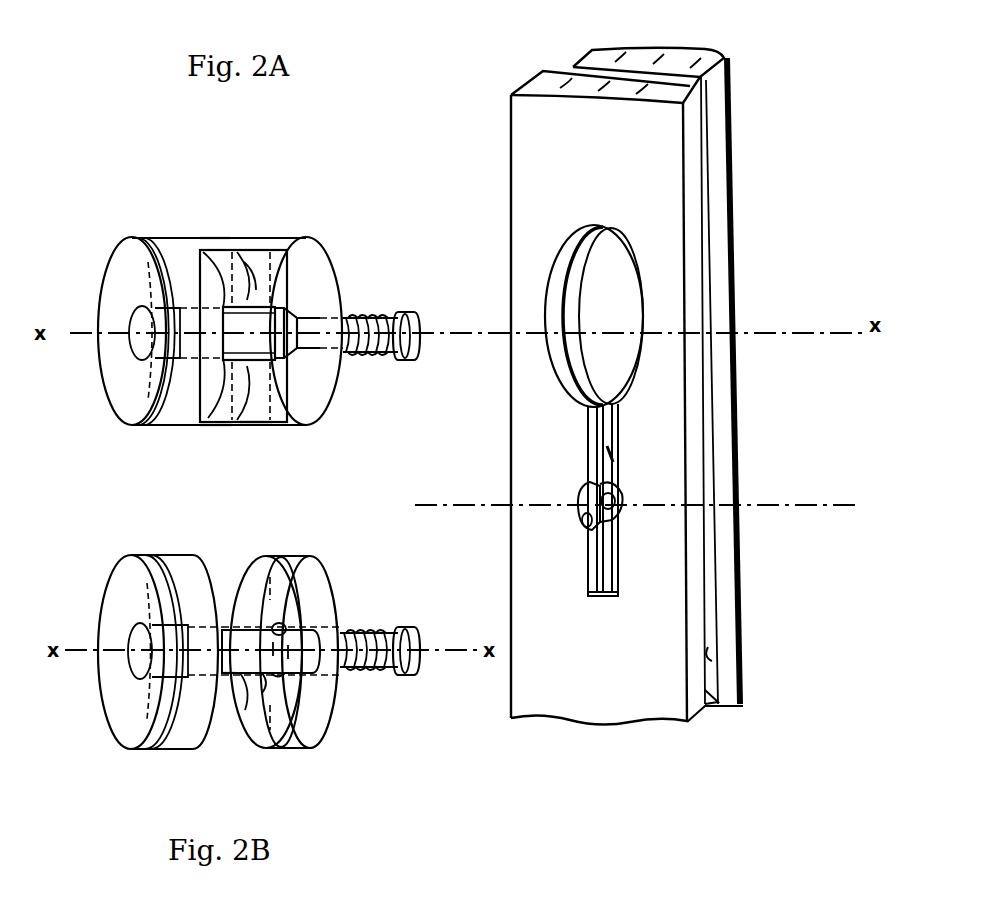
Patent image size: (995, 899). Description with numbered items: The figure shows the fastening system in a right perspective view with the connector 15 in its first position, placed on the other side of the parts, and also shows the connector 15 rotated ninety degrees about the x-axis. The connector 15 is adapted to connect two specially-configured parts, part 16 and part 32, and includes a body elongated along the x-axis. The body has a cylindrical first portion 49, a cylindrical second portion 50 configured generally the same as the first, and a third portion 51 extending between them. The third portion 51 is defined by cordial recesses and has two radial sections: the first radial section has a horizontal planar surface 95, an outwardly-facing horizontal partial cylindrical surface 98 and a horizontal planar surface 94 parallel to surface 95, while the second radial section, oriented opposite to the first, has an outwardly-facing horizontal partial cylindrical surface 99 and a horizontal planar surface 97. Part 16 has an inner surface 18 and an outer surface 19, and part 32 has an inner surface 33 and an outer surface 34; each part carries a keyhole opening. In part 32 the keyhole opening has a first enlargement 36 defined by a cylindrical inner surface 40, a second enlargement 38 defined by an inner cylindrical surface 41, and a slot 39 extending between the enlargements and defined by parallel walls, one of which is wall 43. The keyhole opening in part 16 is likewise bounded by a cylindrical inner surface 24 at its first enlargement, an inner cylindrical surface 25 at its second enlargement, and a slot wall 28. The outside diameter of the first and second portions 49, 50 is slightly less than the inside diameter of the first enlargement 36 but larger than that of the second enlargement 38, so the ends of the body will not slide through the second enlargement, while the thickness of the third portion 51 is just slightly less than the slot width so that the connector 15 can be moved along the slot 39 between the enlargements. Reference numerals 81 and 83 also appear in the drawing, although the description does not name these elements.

In FIG. 2A, the connector 15 is at (128, 140).
In FIG. 2A, the part 16 is at (713, 60).
In FIG. 2A, the inner surface 18 is at (713, 657).
In FIG. 2A, the outer surface 19 is at (742, 578).
In FIG. 2A, the cylindrical inner surface 24 is at (582, 298).
In FIG. 2A, the inner cylindrical surface 25 is at (612, 500).
In FIG. 2A, the wall 28 is at (610, 456).
In FIG. 2A, the part 32 is at (525, 72).
In FIG. 2A, the inner surface 33 is at (687, 722).
In FIG. 2A, the outer surface 34 is at (605, 396).
In FIG. 2A, the first enlargement 36 is at (527, 299).
In FIG. 2A, the second enlargement 38 is at (533, 527).
In FIG. 2A, the slot 39 is at (569, 438).
In FIG. 2A, the cylindrical inner surface 40 is at (548, 362).
In FIG. 2A, the inner cylindrical surface 41 is at (586, 526).
In FIG. 2A, the wall 43 is at (590, 452).
In FIG. 2A, the first portion 49 is at (168, 232).
In FIG. 2B, the first portion 49 is at (160, 549).
In FIG. 2A, the second portion 50 is at (290, 236).
In FIG. 2B, the second portion 50 is at (277, 551).
In FIG. 2A, the third portion 51 is at (238, 232).
In FIG. 2B, the third portion 51 is at (228, 572).
In FIG. 2B, the bore 81 is at (250, 682).
In FIG. 2A, the screw 83 is at (370, 353).
In FIG. 2B, the screw 83 is at (362, 667).
In FIG. 2A, the horizontal planar surface 94 is at (249, 276).
In FIG. 2B, the horizontal planar surface 94 is at (268, 675).
In FIG. 2B, the horizontal planar surface 95 is at (287, 628).
In FIG. 2A, the horizontal planar surface 97 is at (250, 420).
In FIG. 2A, the outwardly-facing horizontal partial cylindrical surface 98 is at (217, 243).
In FIG. 2B, the outwardly-facing horizontal partial cylindrical surface 98 is at (228, 678).
In FIG. 2A, the outwardly-facing horizontal partial cylindrical surface 99 is at (215, 427).